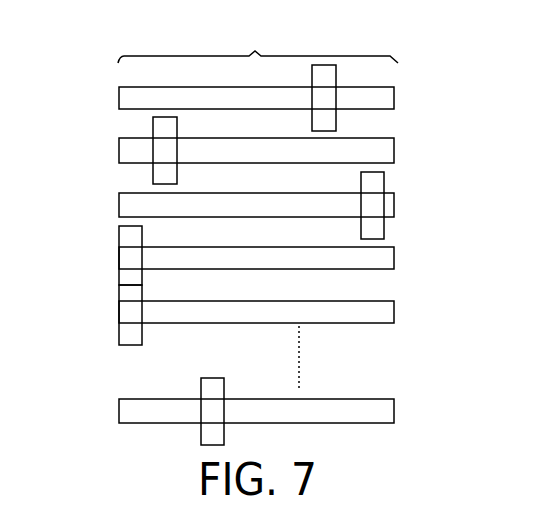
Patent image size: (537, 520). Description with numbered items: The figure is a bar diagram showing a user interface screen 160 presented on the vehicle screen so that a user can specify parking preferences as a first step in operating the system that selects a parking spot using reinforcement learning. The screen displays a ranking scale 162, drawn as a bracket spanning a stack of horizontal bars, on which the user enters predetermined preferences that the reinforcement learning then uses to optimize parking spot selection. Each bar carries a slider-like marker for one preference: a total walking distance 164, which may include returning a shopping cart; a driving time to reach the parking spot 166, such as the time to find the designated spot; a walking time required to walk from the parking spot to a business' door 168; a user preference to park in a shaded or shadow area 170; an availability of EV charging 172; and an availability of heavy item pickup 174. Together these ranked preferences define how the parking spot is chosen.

The user interface screen 160 is at (420, 334).
The ranking scale 162 is at (258, 46).
The total walking distance 164 is at (336, 77).
The driving time to reach the parking spot 166 is at (153, 170).
The walking time required to walk from the parking spot to a business' door 168 is at (384, 181).
The user preference to park in a shaded or shadow area 170 is at (119, 238).
The availability of EV charging 172 is at (119, 333).
The availability of heavy item pickup 174 is at (201, 388).